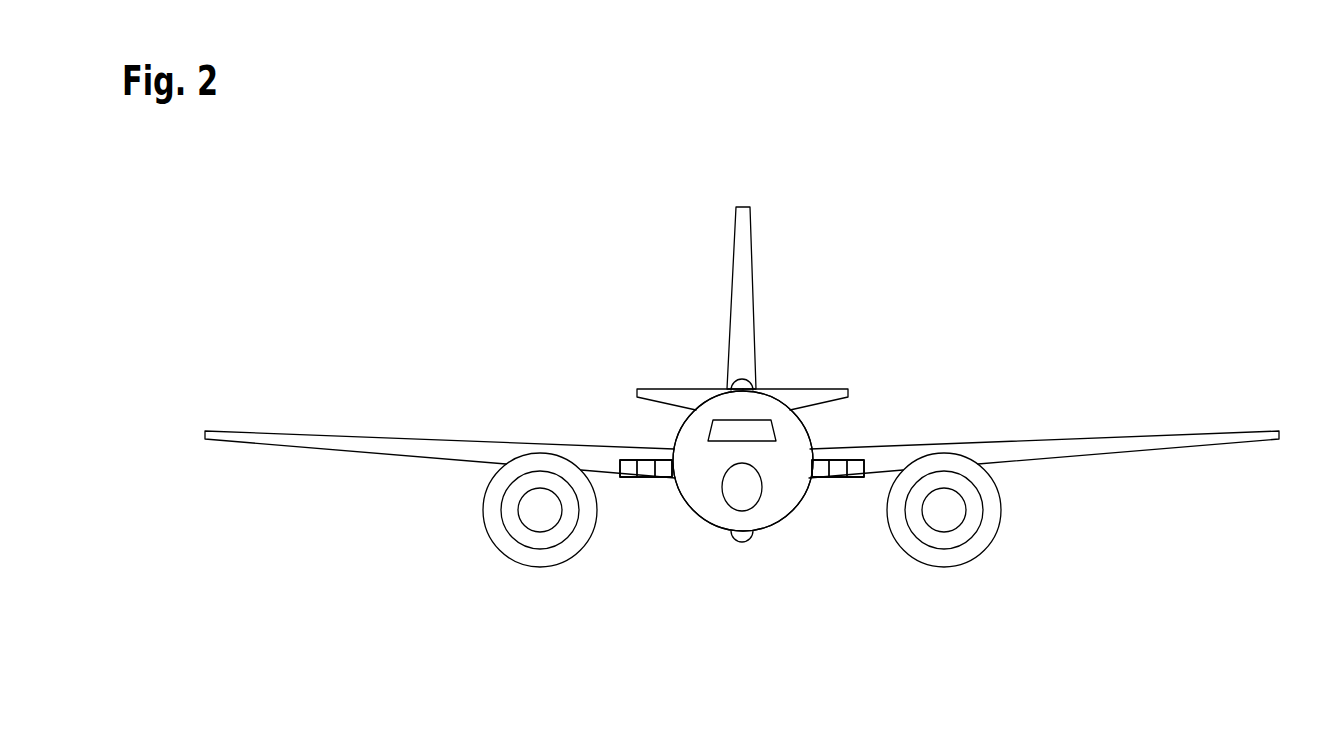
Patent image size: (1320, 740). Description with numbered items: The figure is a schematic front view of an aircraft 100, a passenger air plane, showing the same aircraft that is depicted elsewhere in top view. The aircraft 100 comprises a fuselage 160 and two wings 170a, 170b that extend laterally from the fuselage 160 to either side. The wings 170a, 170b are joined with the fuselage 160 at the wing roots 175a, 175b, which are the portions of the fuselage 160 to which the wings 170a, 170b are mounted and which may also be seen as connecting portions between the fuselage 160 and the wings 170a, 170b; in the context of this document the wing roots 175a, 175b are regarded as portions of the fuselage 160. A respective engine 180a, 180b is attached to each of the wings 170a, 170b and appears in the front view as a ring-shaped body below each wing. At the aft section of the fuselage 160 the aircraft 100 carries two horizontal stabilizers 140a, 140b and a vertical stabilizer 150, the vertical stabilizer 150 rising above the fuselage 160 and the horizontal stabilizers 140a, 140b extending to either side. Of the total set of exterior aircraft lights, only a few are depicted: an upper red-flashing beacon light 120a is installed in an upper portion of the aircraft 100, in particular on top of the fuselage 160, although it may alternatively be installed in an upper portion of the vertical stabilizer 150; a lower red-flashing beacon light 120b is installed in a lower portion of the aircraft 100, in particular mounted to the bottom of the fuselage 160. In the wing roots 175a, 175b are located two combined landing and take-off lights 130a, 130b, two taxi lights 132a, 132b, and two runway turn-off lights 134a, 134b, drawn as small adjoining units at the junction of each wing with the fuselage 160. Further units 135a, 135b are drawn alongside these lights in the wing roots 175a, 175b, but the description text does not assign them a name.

The aircraft 100 is at (1048, 233).
The vertical stabilizer 150 is at (741, 242).
The upper red-flashing beacon light 120a is at (737, 382).
The lower red-flashing beacon light 120b is at (746, 545).
The horizontal stabilizer 140a is at (628, 386).
The horizontal stabilizer 140b is at (856, 386).
The wing 170a is at (318, 414).
The wing 170b is at (1165, 415).
The engine 180a is at (477, 531).
The engine 180b is at (1007, 531).
The runway turn-off light 134a is at (620, 466).
The left middle wing unit 135a is at (620, 449).
The taxi light 132a is at (645, 460).
The combined landing and take-off light 130a is at (663, 478).
The wing root 175a is at (630, 494).
The runway turn-off light 134b is at (864, 466).
The right middle wing unit 135b is at (864, 449).
The taxi light 132b is at (839, 460).
The combined landing and take-off light 130b is at (821, 478).
The wing root 175b is at (854, 494).
The fuselage 160 is at (708, 545).